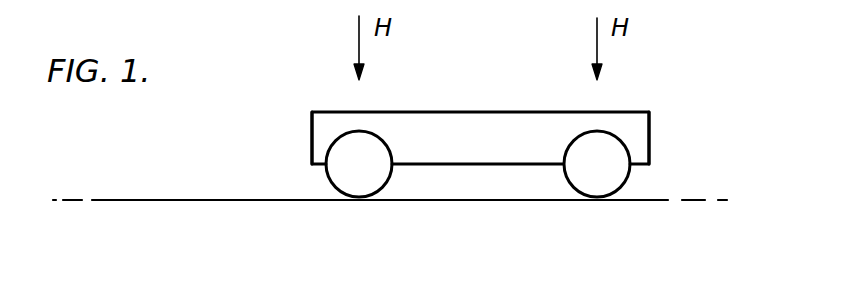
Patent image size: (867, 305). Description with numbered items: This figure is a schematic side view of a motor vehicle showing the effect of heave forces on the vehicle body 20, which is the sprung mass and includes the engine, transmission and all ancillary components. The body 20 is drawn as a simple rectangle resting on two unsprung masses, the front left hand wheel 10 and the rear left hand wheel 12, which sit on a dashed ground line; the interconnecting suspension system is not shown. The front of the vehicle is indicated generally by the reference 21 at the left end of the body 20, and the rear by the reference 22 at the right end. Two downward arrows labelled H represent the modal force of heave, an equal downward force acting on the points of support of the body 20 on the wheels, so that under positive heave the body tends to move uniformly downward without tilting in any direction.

The front left hand wheel 10 is at (358, 185).
The rear left hand wheel 12 is at (600, 185).
The motor vehicle body 20 is at (453, 122).
The front of the vehicle 21 is at (301, 124).
The rear of the vehicle 22 is at (657, 136).